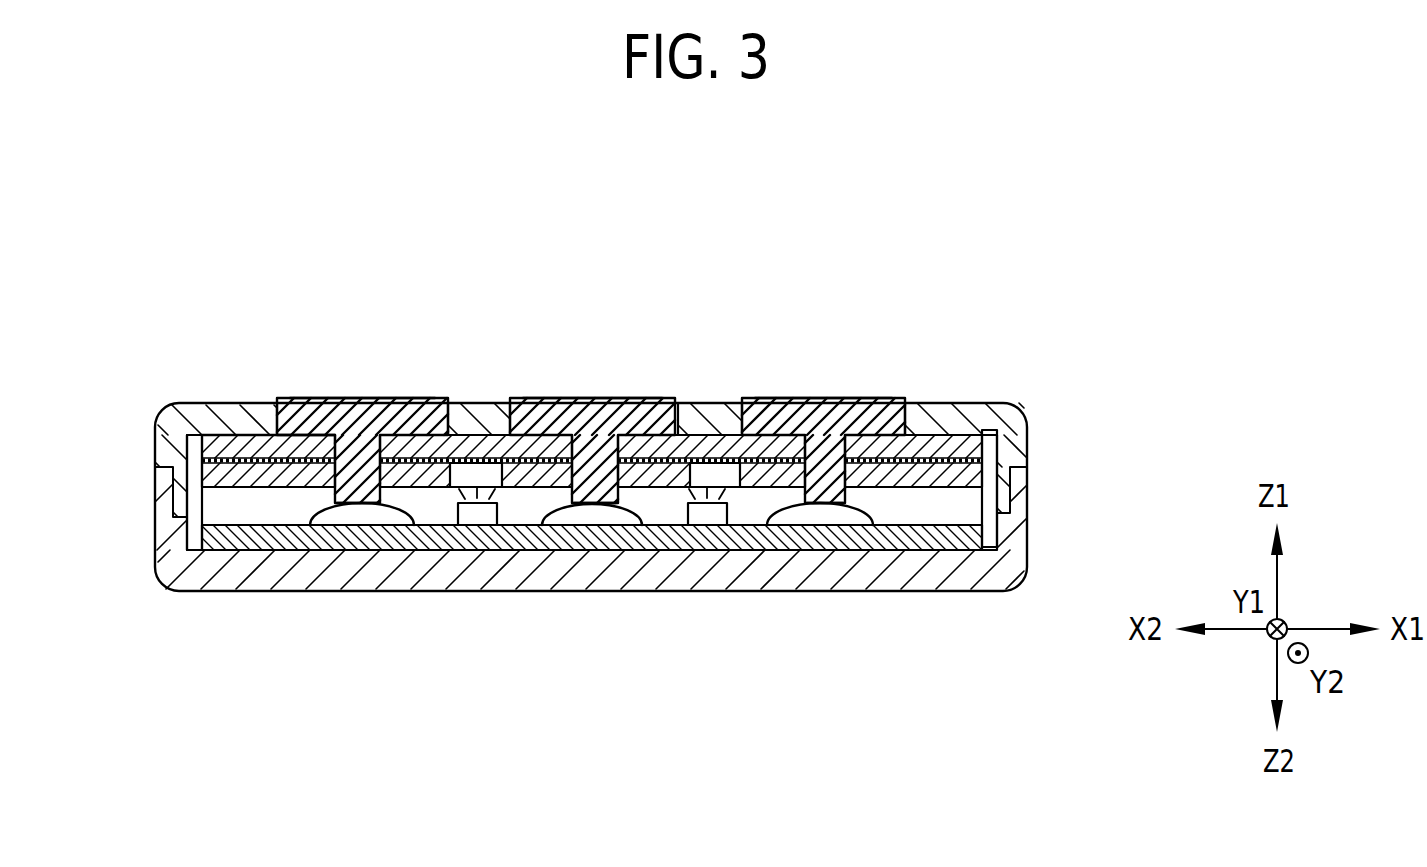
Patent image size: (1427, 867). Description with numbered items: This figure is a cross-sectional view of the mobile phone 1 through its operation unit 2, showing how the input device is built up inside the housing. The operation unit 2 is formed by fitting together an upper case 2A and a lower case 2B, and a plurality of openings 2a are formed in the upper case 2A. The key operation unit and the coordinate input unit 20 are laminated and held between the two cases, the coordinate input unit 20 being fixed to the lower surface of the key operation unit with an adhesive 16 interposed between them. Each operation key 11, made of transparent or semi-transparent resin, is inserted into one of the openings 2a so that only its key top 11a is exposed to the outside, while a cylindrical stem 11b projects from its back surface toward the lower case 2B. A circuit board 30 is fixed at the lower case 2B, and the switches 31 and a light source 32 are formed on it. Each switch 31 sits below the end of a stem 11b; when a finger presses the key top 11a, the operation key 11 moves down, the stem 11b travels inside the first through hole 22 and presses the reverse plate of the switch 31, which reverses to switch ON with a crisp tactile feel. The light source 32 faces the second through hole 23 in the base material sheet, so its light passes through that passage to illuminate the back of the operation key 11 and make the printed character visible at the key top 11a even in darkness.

The electronic device 1 is at (166, 234).
The operation unit 2 is at (1023, 338).
The upper case 2A is at (1028, 443).
The lower case 2B is at (1028, 543).
The opening 2a is at (277, 390).
The operation key 11 is at (388, 386).
The key top 11a is at (422, 397).
The stem 11b is at (393, 515).
The adhesive 16 is at (228, 437).
The coordinate input unit 20 is at (187, 467).
The first through hole 22 is at (336, 478).
The second through hole 23 is at (478, 470).
The circuit board 30 is at (907, 540).
The switch 31 is at (348, 515).
The light source 32 is at (473, 517).